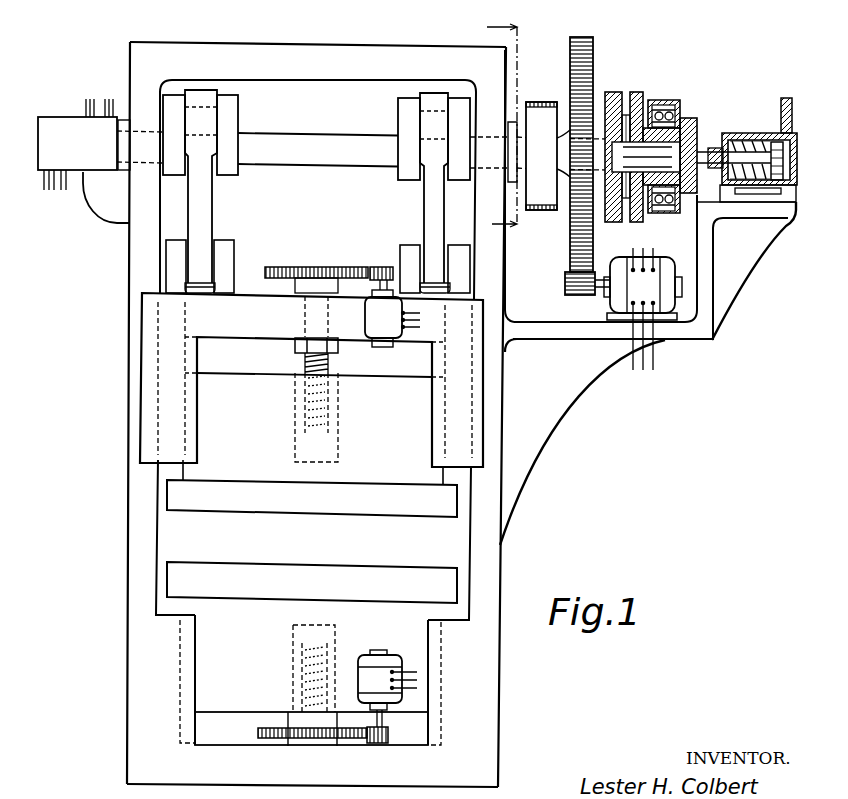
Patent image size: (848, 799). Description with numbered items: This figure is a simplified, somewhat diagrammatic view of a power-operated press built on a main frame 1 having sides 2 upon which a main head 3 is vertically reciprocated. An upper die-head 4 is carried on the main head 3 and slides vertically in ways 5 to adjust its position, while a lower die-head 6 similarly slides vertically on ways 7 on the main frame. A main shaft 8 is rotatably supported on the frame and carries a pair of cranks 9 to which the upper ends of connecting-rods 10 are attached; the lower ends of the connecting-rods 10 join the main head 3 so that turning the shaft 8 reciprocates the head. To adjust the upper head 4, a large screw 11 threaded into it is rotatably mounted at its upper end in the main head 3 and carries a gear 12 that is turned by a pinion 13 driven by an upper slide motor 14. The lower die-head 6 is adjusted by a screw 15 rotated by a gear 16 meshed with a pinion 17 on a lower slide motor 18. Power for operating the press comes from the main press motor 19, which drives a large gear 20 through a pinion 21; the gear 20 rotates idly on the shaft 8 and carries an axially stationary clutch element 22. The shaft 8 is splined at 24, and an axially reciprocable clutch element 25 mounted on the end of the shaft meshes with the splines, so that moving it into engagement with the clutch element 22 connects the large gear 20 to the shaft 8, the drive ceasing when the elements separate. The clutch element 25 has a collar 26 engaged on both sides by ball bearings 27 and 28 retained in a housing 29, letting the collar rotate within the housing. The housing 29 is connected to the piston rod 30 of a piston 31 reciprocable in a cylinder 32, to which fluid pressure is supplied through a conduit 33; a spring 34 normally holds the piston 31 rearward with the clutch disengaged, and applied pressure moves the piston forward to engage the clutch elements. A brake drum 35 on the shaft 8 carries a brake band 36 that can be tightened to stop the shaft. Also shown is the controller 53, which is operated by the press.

The main frame 1 is at (494, 560).
The sides 2 is at (488, 435).
The main head 3 is at (484, 376).
The upper die-head 4 is at (221, 504).
The ways 5 is at (432, 424).
The lower die-head 6 is at (222, 572).
The ways 7 is at (432, 633).
The main shaft 8 is at (306, 144).
The cranks 9 is at (398, 107).
The connecting-rods 10 is at (427, 201).
The screw 11 is at (333, 368).
The gear 12 is at (350, 270).
The pinion 13 is at (387, 263).
The upper slide motor 14 is at (366, 318).
The screw 15 is at (310, 657).
The gear 16 is at (258, 730).
The pinion 17 is at (389, 733).
The lower slide motor 18 is at (370, 662).
The main press motor 19 is at (613, 302).
The large gear 20 is at (568, 259).
The pinion 21 is at (579, 296).
The axially stationary clutch element 22 is at (615, 92).
The splines 24 is at (693, 121).
The axially reciprocable clutch element 25 is at (643, 93).
The collar 26 is at (664, 101).
The ball bearing 27 is at (657, 210).
The ball bearing 28 is at (672, 212).
The housing 29 is at (685, 100).
The piston rod 30 is at (707, 152).
The piston 31 is at (789, 150).
The cylinder 32 is at (768, 137).
The conduit 33 is at (792, 110).
The spring 34 is at (740, 142).
The brake drum 35 is at (543, 198).
The brake band 36 is at (536, 101).
The controller 53 is at (56, 124).